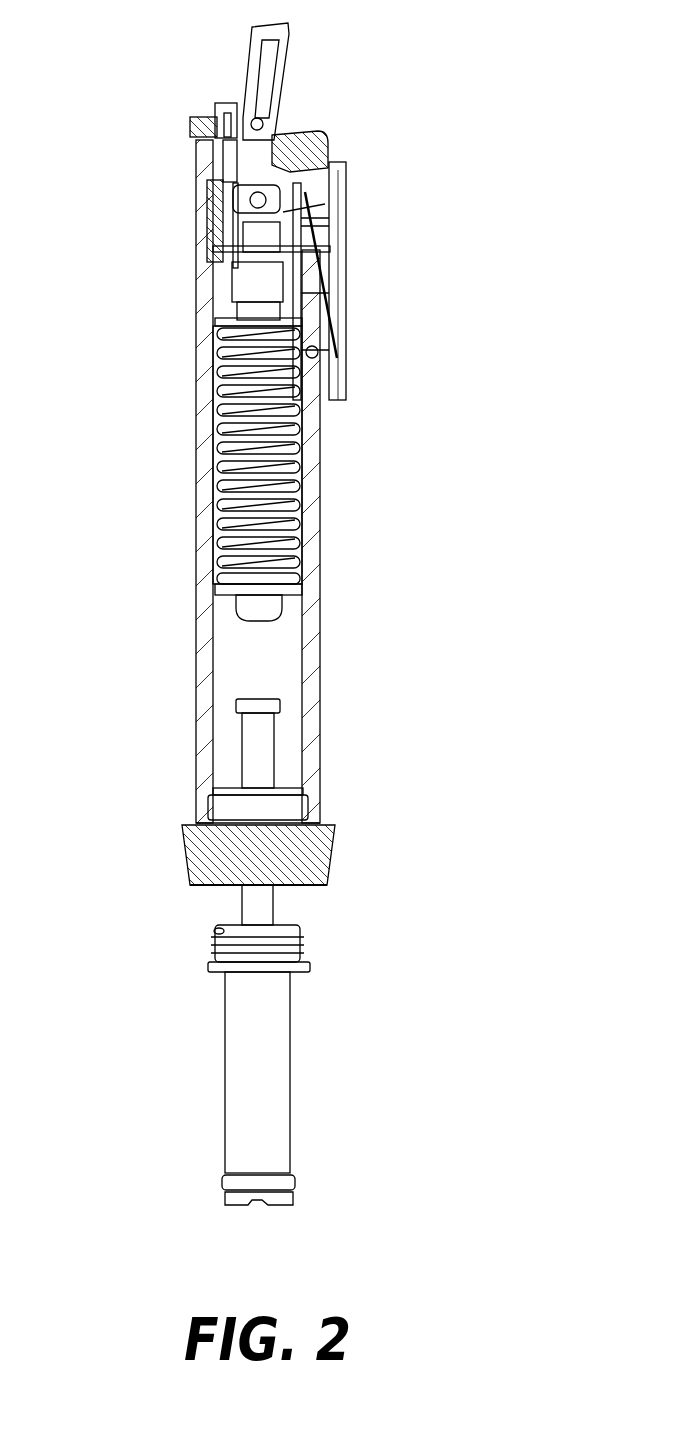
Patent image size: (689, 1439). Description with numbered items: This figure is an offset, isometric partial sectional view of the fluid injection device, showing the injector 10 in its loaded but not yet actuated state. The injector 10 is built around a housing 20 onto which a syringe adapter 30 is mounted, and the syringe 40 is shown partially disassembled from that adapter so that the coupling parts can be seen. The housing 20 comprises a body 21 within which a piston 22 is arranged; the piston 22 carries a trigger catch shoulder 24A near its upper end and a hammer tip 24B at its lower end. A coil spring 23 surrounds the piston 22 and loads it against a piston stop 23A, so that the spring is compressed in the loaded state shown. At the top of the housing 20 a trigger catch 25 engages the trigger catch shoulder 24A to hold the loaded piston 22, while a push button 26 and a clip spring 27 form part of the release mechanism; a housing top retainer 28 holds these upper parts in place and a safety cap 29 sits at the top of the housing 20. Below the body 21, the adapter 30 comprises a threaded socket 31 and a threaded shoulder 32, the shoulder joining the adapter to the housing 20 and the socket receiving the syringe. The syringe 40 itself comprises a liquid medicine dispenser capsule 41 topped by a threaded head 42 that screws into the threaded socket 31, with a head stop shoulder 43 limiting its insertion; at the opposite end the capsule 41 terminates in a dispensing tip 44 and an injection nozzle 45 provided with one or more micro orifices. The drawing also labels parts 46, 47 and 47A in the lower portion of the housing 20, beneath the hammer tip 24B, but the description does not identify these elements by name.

The injector 10 is at (503, 98).
The housing 20 is at (325, 663).
The body 21 is at (196, 520).
The piston 22 is at (255, 308).
The coil spring 23 is at (290, 435).
The piston stop 23A is at (196, 603).
The trigger catch shoulder 24A is at (330, 250).
The hammer tip 24B is at (256, 624).
The trigger catch 25 is at (230, 222).
The push button 26 is at (318, 136).
The clip spring 27 is at (327, 232).
The housing top retainer 28 is at (345, 382).
The safety cap 29 is at (240, 75).
The syringe adapter 30 is at (334, 855).
The threaded socket 31 is at (185, 858).
The threaded shoulder 32 is at (232, 793).
The syringe 40 is at (224, 1079).
The liquid medicine dispenser capsule 41 is at (290, 1085).
The threaded head 42 is at (305, 945).
The head stop shoulder 43 is at (218, 972).
The dispensing tip 44 is at (297, 1190).
The injection nozzle 45 is at (260, 1205).
The piston block 46 is at (278, 762).
The piston stem 47 is at (263, 699).
The piston head 47A is at (280, 700).